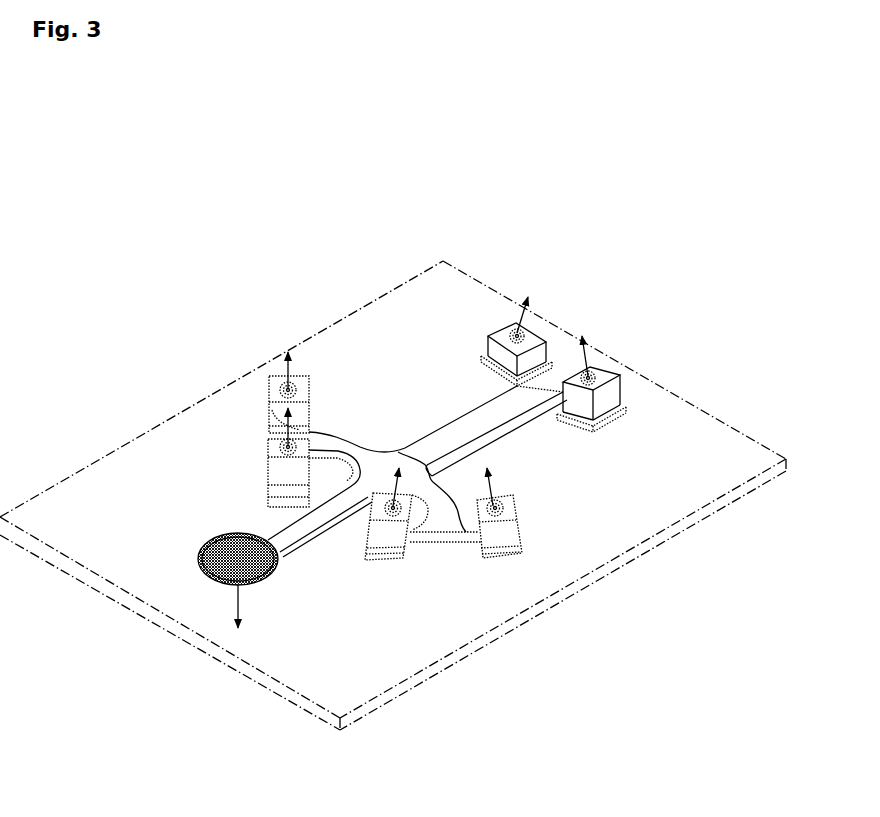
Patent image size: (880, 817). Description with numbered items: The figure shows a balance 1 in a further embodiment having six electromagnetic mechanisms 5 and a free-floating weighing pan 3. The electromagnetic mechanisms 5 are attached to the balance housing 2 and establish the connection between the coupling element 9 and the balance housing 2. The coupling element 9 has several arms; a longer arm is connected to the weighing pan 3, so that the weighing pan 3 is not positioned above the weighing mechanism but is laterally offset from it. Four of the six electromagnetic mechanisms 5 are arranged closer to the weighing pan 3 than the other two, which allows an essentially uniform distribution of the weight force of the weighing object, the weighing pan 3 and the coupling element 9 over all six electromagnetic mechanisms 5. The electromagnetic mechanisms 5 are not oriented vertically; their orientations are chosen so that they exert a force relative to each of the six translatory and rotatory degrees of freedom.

The balance 1 is at (180, 225).
The balance housing 2 is at (410, 333).
The weighing pan 3 is at (200, 570).
The electromagnetic mechanisms 5 is at (480, 338).
The coupling element 9 is at (283, 527).